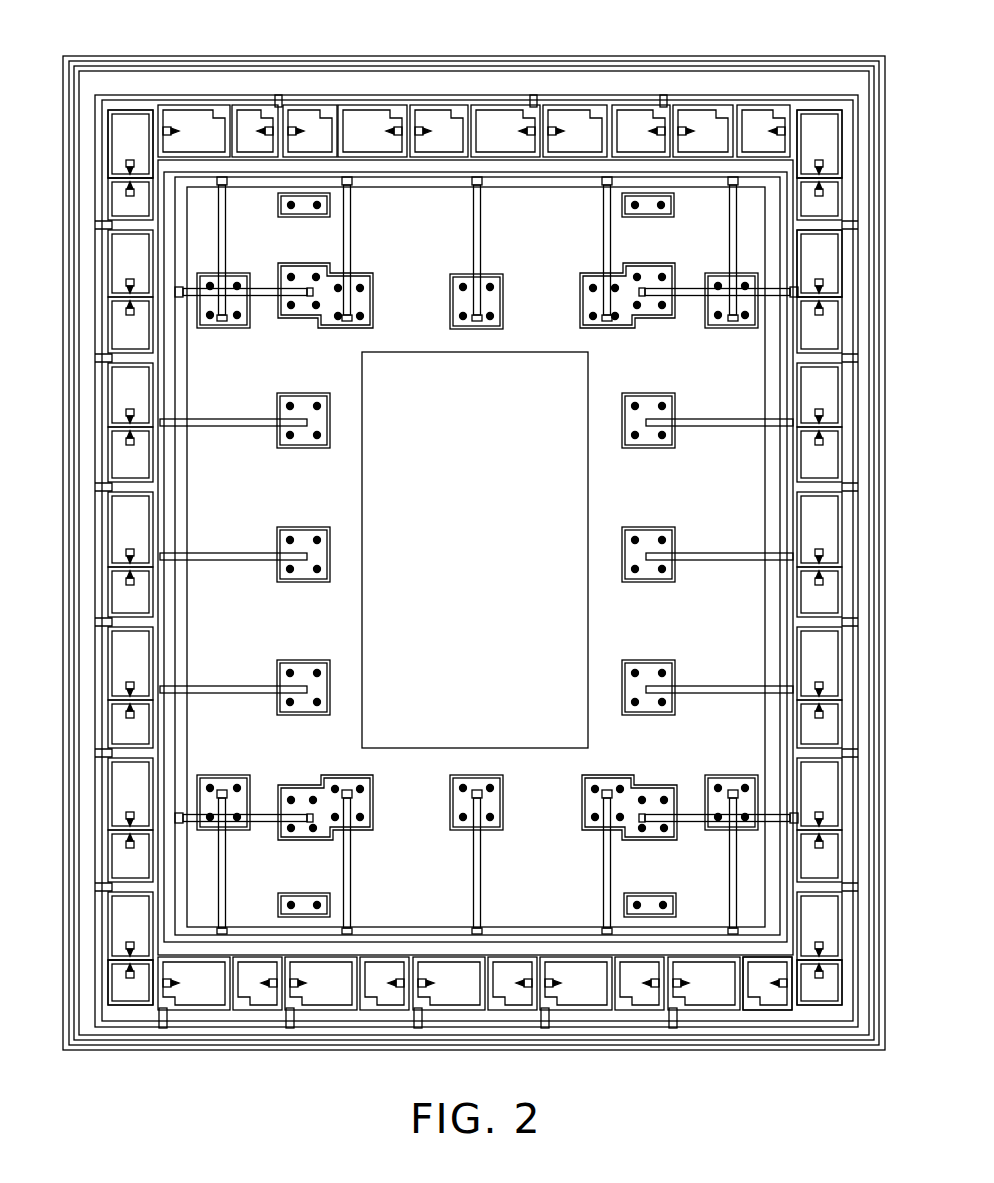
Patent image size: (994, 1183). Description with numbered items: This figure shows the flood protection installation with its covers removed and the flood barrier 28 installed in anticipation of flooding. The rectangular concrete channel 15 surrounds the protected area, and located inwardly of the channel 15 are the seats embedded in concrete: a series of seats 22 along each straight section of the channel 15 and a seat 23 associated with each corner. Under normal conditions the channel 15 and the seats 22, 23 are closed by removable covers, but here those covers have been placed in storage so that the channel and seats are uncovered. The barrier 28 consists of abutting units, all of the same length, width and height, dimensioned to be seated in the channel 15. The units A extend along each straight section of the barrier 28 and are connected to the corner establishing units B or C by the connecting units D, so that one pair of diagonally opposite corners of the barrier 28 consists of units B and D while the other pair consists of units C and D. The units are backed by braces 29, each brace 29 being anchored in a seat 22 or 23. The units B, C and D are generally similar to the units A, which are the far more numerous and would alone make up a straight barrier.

The concrete channel 15 is at (433, 56).
The flood barrier 28 is at (584, 92).
The brace 29 is at (477, 227).
The seat 22 is at (654, 442).
The corner seat 23 is at (576, 296).
The unit A is at (820, 445).
The corner establishing unit B is at (814, 155).
The corner establishing unit C is at (124, 128).
The unit D is at (818, 255).